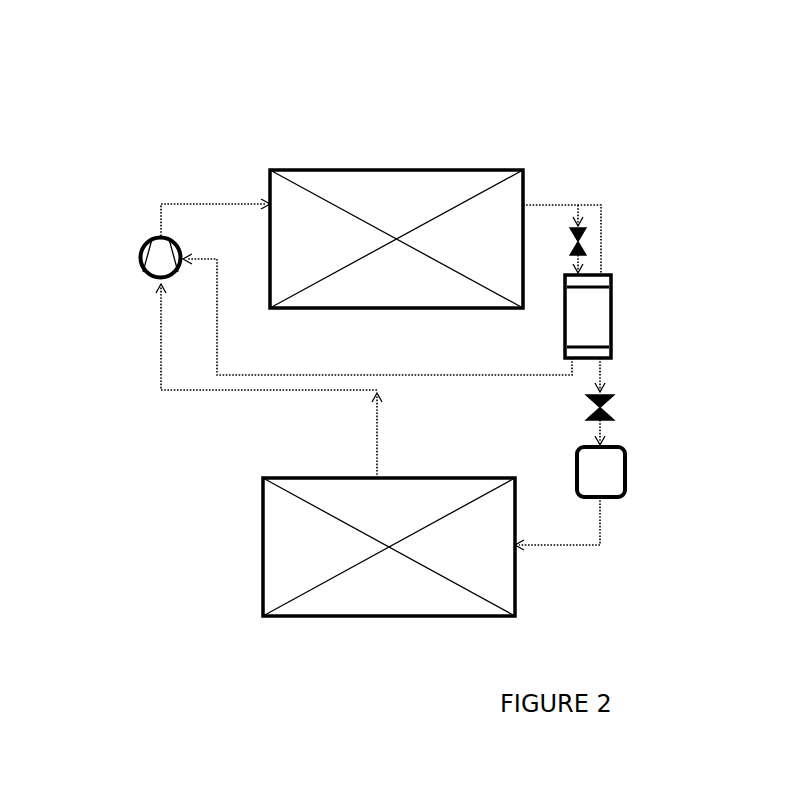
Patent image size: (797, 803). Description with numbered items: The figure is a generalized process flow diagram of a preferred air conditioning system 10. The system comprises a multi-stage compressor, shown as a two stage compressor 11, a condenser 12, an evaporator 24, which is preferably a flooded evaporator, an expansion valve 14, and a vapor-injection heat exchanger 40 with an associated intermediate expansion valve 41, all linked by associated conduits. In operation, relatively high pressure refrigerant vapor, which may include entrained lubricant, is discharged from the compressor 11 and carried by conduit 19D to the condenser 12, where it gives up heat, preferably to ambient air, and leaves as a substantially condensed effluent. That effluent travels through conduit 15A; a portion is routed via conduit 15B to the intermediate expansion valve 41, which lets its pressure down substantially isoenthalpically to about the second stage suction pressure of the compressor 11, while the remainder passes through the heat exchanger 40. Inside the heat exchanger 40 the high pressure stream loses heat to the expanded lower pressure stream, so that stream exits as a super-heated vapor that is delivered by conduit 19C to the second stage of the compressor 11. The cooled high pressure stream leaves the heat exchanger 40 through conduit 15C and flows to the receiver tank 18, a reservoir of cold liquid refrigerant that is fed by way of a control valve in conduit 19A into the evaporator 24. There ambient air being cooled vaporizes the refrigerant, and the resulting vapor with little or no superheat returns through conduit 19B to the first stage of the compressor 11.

The air conditioning system 10 is at (519, 111).
The two stage compressor 11 is at (140, 250).
The condenser 12 is at (392, 170).
The expansion valve 14 is at (612, 410).
The conduit 15A is at (549, 203).
The conduit 15B is at (583, 222).
The conduit 15C is at (611, 365).
The receiver tank 18 is at (625, 495).
The conduit 19A is at (605, 530).
The conduit 19B is at (373, 458).
The conduit 19C is at (510, 376).
The conduit 19D is at (192, 203).
The evaporator 24 is at (263, 532).
The vapor-injection heat exchanger 40 is at (611, 305).
The intermediate expansion valve 41 is at (585, 240).